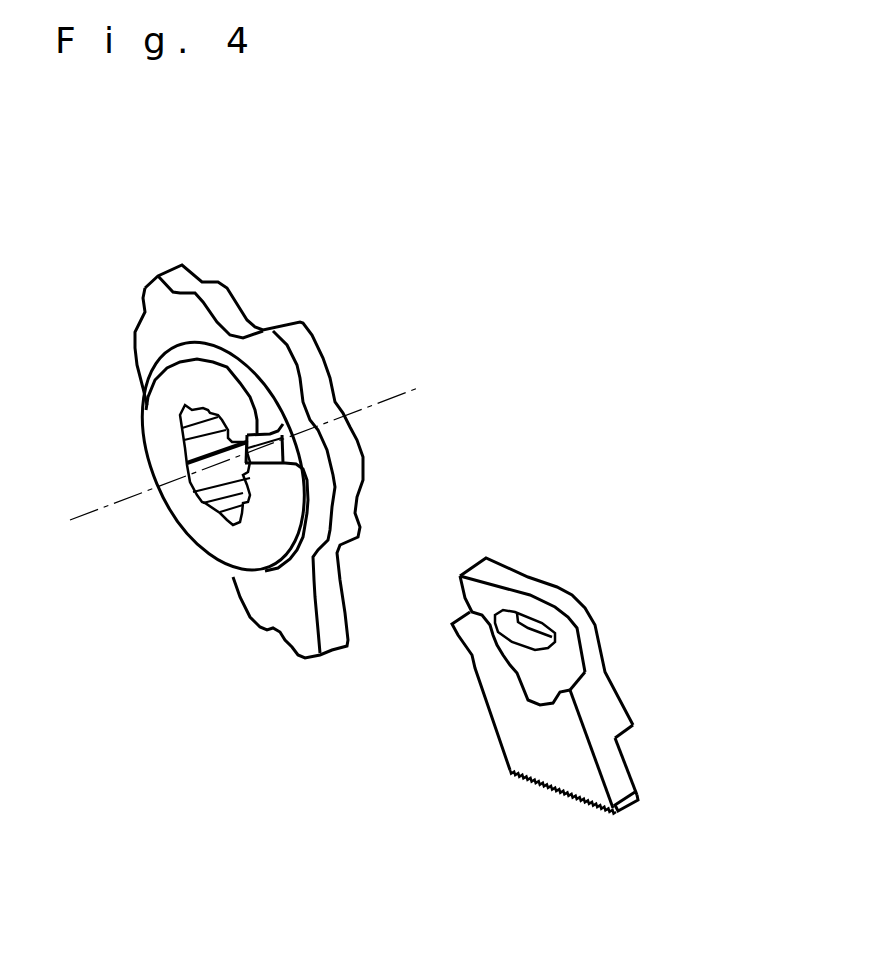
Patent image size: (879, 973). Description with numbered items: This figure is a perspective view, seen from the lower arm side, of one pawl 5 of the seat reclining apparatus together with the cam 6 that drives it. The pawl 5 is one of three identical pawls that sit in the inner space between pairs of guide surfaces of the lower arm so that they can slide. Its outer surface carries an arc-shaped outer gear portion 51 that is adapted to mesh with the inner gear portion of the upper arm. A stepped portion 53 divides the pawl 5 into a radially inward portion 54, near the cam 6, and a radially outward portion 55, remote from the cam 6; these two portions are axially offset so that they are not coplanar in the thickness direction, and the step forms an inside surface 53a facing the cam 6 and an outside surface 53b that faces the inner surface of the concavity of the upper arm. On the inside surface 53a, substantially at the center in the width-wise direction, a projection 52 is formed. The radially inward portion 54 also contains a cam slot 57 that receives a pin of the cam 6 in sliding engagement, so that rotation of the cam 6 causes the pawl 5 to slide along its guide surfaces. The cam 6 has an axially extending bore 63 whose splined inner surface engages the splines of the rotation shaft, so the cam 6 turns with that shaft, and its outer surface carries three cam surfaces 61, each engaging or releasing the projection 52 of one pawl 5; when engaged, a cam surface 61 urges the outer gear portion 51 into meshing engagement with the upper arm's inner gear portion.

The pawl 5 is at (595, 718).
The outer gear portion 51 is at (528, 850).
The projection 52 is at (479, 701).
The stepped portion 53 is at (676, 800).
The inside surface 53a is at (604, 825).
The outside surface 53b is at (708, 744).
The radially inward portion 54 is at (586, 641).
The radially outward portion 55 is at (696, 808).
The cam slot 57 is at (540, 567).
The cam 6 is at (269, 462).
The cam surface 61 is at (282, 462).
The bore 63 is at (157, 510).